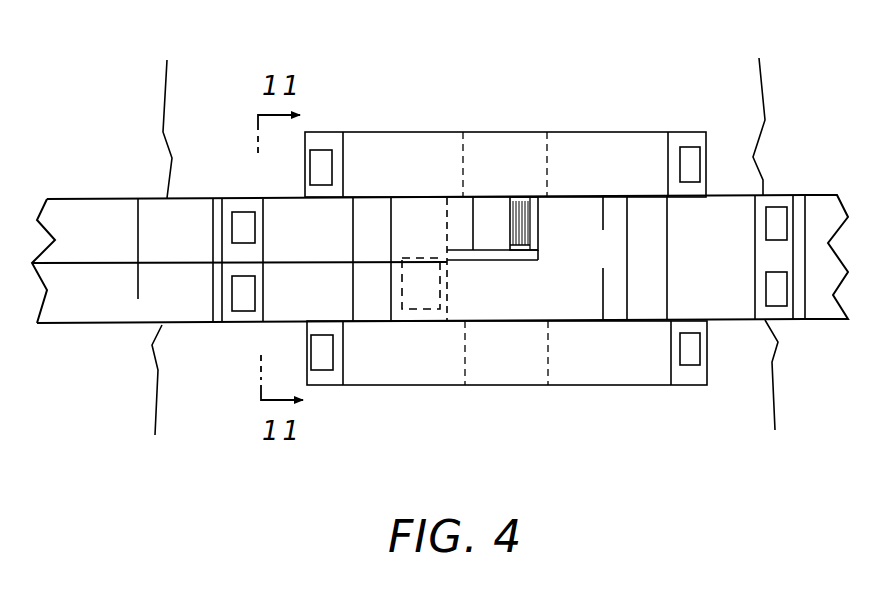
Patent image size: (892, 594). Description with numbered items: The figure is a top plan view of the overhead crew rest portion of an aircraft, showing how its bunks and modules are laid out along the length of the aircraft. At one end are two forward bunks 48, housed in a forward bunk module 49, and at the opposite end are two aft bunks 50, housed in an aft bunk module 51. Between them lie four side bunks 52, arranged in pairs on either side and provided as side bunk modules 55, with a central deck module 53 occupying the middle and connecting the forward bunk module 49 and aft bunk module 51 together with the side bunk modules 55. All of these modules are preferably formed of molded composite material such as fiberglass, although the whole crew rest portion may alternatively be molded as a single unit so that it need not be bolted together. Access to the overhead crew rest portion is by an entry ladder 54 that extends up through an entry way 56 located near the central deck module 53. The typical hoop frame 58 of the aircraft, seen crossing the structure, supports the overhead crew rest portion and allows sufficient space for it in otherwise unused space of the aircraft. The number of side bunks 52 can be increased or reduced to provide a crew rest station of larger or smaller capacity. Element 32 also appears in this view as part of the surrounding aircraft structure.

The frame member 32 is at (770, 95).
The forward bunks 48 is at (267, 330).
The forward bunk module 49 is at (228, 330).
The aft bunks 50 is at (765, 190).
The aft bunk module 51 is at (793, 190).
The side bunks 52 is at (605, 128).
The central deck module 53 is at (488, 278).
The entry ladder 54 is at (510, 223).
The side bunk modules 55 is at (403, 130).
The entry way 56 is at (547, 229).
The hoop frame 58 is at (137, 215).